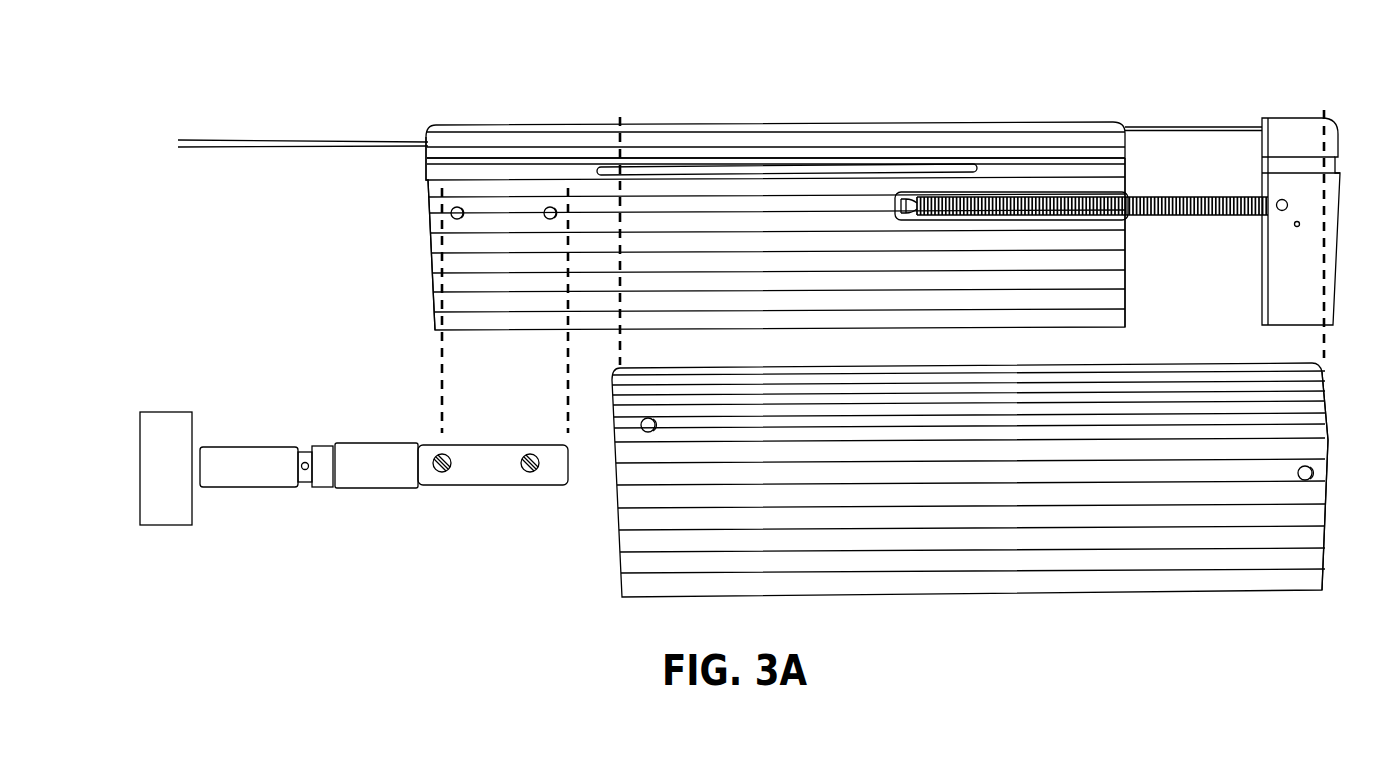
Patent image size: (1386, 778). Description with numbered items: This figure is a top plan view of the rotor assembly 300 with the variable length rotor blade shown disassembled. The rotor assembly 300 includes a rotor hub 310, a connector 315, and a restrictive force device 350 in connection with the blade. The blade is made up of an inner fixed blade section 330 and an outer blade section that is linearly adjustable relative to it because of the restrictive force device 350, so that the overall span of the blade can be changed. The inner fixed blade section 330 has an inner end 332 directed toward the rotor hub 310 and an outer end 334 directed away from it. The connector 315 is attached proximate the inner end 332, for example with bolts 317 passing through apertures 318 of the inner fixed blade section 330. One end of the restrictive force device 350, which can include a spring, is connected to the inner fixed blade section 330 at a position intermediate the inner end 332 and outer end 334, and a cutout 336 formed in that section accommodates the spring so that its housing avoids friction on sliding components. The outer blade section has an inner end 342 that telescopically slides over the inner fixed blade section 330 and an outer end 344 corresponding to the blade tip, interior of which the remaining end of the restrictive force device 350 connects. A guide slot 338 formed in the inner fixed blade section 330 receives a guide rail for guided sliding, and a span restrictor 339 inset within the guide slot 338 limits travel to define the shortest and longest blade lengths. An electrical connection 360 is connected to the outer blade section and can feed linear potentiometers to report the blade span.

The rotor assembly 300 is at (1200, 80).
The rotor hub 310 is at (166, 468).
The connector 315 is at (384, 488).
The bolts 317 is at (529, 455).
The apertures 318 is at (457, 219).
The inner fixed blade section 330 is at (767, 229).
The inner end 332 is at (435, 312).
The outer end 334 is at (1125, 270).
The cutout 336 is at (960, 222).
The guide slot 338 is at (1020, 167).
The span restrictor 339 is at (742, 170).
The inner end 342 is at (613, 545).
The outer end 344 is at (1322, 555).
The restrictive force device 350 is at (1198, 216).
The electrical connection 360 is at (290, 141).